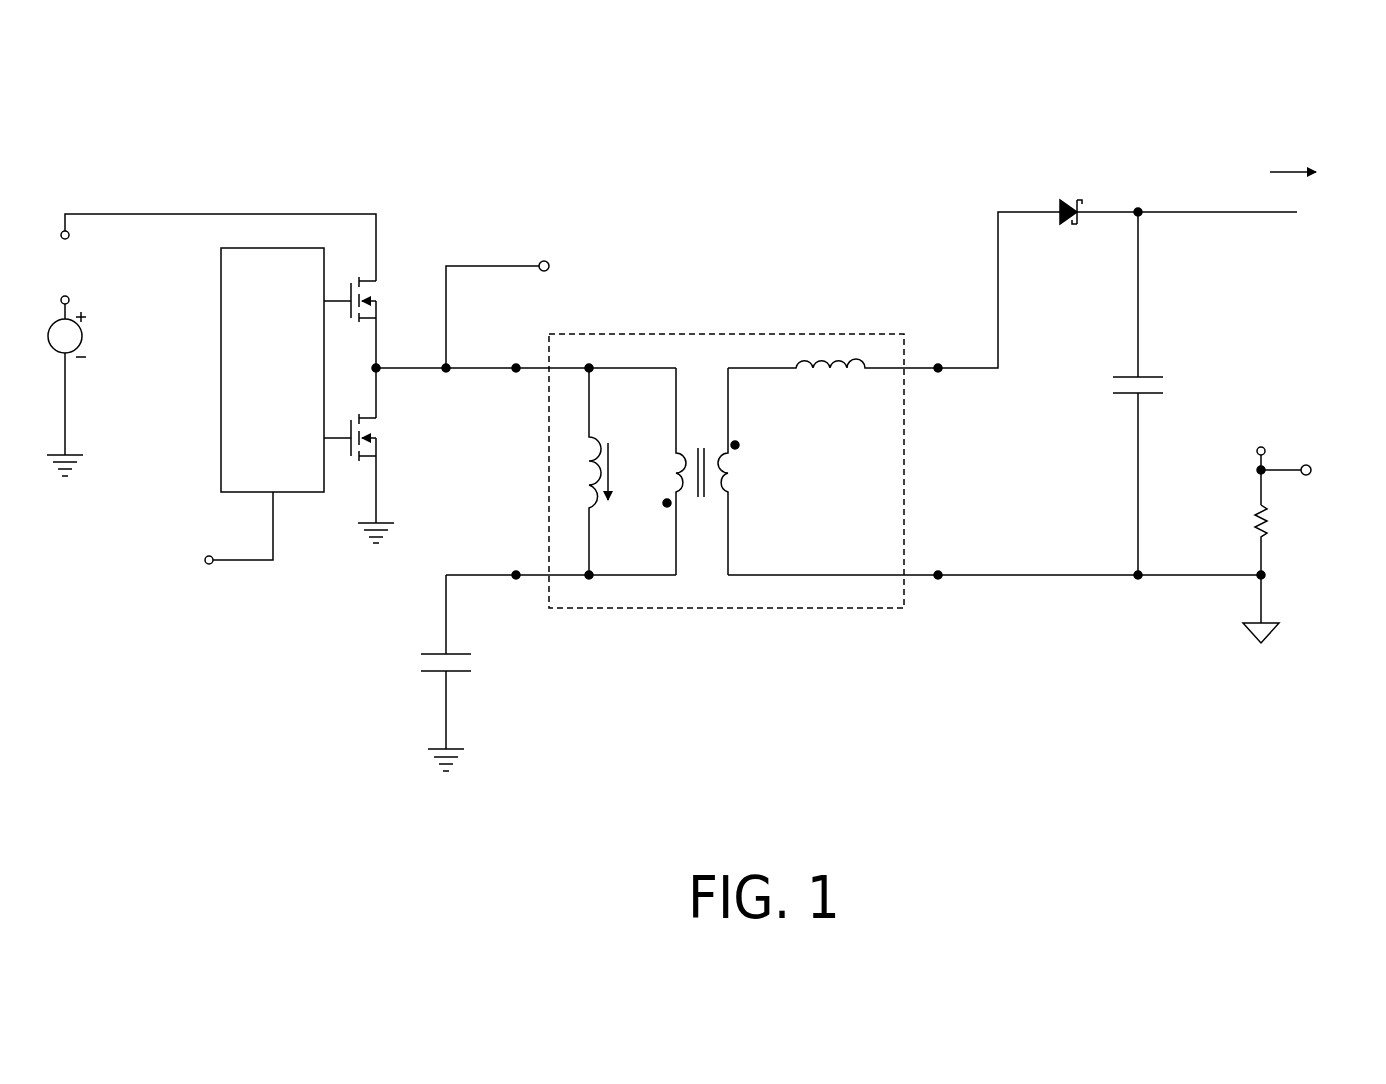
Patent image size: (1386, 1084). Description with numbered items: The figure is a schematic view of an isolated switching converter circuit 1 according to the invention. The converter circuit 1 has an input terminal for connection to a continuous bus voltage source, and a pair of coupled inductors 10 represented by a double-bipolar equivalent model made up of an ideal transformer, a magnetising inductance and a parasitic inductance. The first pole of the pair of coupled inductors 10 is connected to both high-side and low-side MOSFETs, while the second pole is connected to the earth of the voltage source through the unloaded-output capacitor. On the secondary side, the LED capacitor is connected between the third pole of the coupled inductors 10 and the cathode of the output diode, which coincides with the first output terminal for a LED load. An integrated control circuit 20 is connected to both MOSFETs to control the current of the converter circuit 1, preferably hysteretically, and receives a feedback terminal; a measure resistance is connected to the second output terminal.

The converter circuit 1 is at (664, 172).
The pair of coupled inductors 10 is at (745, 610).
The integrated control circuit 20 is at (221, 292).